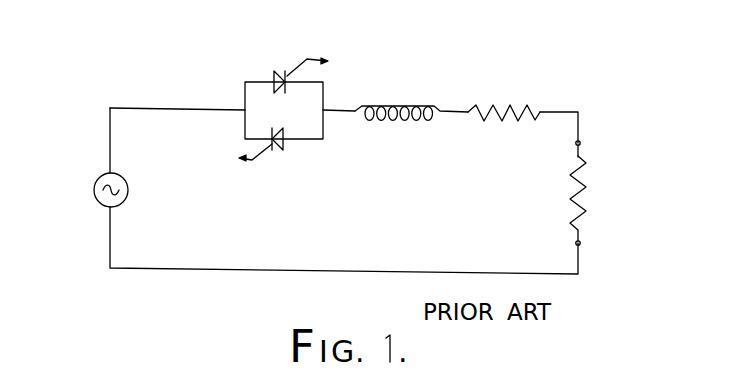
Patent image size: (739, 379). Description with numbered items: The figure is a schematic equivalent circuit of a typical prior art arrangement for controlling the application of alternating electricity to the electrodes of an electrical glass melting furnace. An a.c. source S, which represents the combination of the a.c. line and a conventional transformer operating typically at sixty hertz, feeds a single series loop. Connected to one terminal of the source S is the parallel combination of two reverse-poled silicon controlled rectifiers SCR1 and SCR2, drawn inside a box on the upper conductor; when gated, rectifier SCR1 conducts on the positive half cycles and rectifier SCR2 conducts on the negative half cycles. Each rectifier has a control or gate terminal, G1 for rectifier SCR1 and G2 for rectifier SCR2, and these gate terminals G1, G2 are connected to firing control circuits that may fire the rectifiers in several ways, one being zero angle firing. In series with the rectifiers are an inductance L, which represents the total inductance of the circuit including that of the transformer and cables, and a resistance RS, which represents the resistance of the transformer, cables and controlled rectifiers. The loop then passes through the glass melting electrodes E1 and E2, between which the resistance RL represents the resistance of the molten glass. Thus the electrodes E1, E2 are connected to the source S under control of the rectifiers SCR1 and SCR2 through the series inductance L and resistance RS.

The a.c. source S is at (94, 197).
The silicon controlled rectifier SCR1 is at (281, 70).
The gate terminal G1 is at (307, 59).
The silicon controlled rectifier SCR2 is at (281, 150).
The gate terminal G2 is at (254, 161).
The inductance L is at (400, 105).
The resistance RS is at (498, 108).
The glass melting electrode E1 is at (581, 143).
The resistance RL is at (580, 192).
The glass melting electrode E2 is at (606, 246).